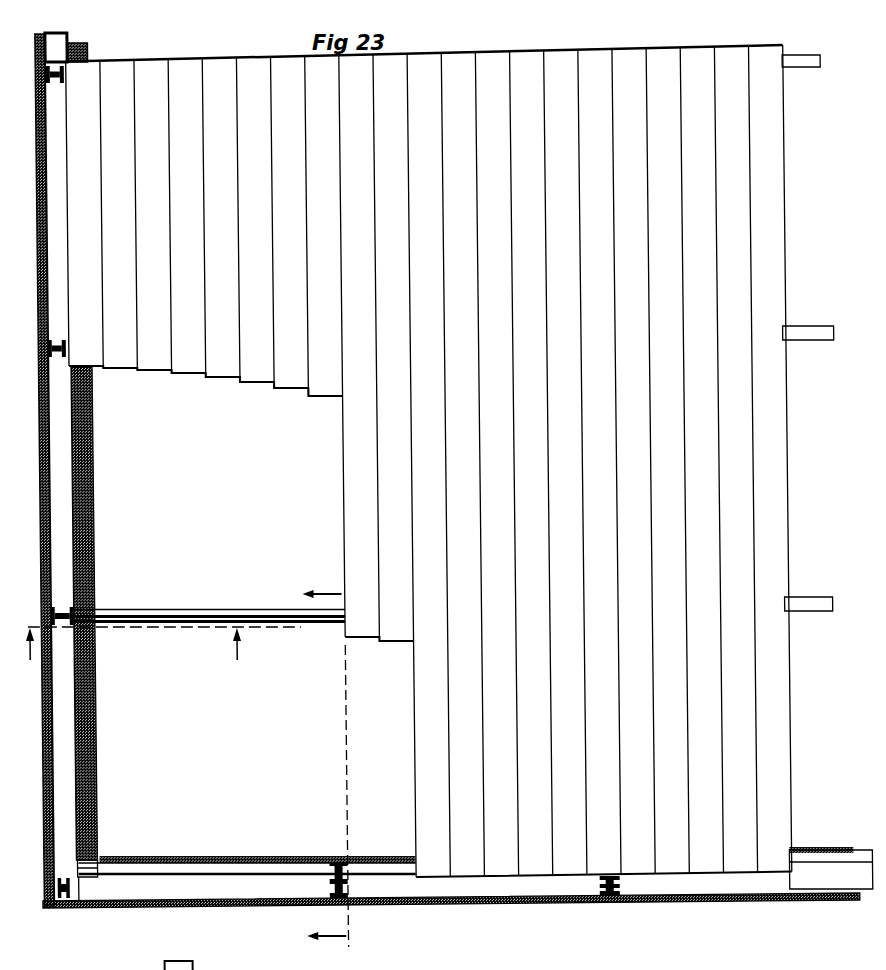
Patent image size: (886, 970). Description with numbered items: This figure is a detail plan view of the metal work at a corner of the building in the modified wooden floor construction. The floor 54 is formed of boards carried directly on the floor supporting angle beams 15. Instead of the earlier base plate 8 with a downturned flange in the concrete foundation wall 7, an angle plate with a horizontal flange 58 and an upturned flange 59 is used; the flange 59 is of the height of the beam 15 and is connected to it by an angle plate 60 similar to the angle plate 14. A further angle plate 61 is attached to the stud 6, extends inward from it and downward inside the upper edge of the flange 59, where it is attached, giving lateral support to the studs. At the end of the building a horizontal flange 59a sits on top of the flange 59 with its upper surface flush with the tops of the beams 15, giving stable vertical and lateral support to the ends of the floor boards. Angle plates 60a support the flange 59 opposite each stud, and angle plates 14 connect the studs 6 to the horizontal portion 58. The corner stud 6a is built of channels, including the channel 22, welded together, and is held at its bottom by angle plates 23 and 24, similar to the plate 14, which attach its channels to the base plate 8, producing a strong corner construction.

The vertical double channel or stud member 6 is at (38, 371).
The corner stud 6a is at (45, 900).
The concrete foundation wall 7 is at (85, 729).
The angle plate 8 is at (596, 894).
The angle plate 14 is at (44, 341).
The floor supporting angle beam 15 is at (306, 617).
The channel 22 is at (162, 659).
The angle plate 23 is at (38, 877).
The angle plate 24 is at (60, 917).
The floor 54 is at (344, 542).
The flange 58 is at (62, 790).
The upturned flange 59 is at (84, 771).
The horizontal flange 59a is at (173, 866).
The angle plate 60 is at (86, 624).
The angle plate 60a is at (333, 855).
The angle plate 61 is at (86, 603).